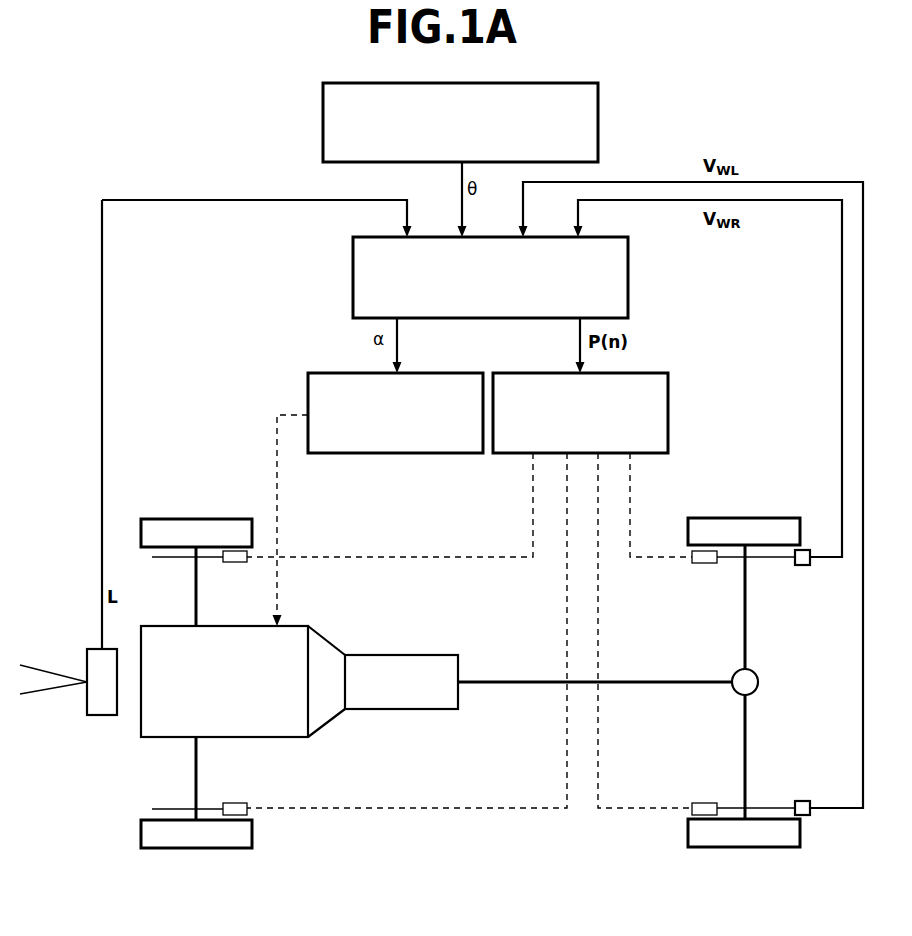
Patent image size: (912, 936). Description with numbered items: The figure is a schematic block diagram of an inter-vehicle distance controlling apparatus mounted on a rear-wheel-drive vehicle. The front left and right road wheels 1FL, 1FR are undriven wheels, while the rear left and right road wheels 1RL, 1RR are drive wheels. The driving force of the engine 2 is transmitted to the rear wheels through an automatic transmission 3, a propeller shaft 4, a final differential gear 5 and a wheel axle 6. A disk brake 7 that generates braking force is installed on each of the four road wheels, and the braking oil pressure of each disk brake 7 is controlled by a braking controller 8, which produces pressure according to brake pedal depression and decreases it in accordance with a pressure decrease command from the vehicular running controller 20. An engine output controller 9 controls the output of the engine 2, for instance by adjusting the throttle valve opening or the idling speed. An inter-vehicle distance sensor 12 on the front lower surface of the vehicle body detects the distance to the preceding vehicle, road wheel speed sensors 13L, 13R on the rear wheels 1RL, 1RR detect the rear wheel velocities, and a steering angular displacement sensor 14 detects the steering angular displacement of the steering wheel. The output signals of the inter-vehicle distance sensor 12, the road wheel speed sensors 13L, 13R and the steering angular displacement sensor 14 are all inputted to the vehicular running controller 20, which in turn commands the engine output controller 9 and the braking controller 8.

The steering angular displacement sensor 14 is at (598, 112).
The vehicular running controller 20 is at (353, 278).
The engine output controller 9 is at (308, 386).
The braking controller 8 is at (668, 392).
The engine 2 is at (290, 738).
The automatic transmission 3 is at (412, 710).
The propeller shaft 4 is at (635, 681).
The final differential gear 5 is at (758, 682).
The wheel axle 6 is at (747, 650).
The disk brake 7 is at (230, 566).
The front right road wheel 1FR is at (155, 518).
The front left road wheel 1FL is at (245, 849).
The rear right road wheel 1RR is at (753, 517).
The rear left road wheel 1RL is at (748, 848).
The road wheel speed sensor 13R is at (810, 566).
The road wheel speed sensor 13L is at (812, 799).
The inter-vehicle distance sensor 12 is at (100, 716).